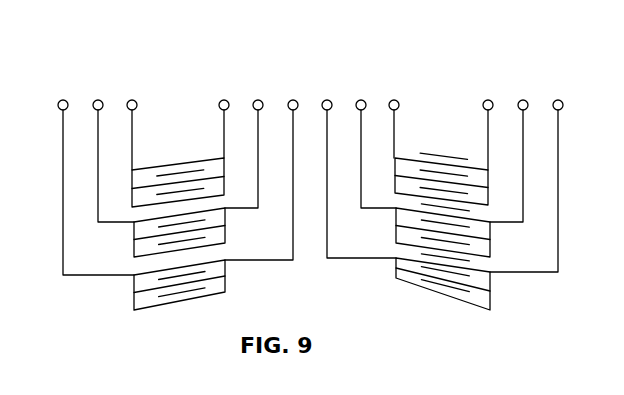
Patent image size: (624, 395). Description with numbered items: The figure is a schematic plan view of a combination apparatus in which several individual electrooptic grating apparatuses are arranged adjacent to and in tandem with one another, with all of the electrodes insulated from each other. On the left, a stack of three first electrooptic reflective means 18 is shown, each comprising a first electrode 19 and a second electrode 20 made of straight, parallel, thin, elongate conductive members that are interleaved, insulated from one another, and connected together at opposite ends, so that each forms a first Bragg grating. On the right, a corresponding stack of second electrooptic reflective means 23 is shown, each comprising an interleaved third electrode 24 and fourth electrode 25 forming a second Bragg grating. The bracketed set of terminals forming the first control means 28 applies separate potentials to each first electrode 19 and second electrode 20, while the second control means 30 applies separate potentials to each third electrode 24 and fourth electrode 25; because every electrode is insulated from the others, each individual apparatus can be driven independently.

The first electrooptic reflective means 18 is at (231, 293).
The first electrode 19 is at (165, 158).
The second electrode 20 is at (213, 154).
The second electrooptic reflective means 23 is at (385, 289).
The third electrode 24 is at (440, 153).
The fourth electrode 25 is at (405, 157).
The first control means 28 is at (303, 78).
The second control means 30 is at (592, 75).